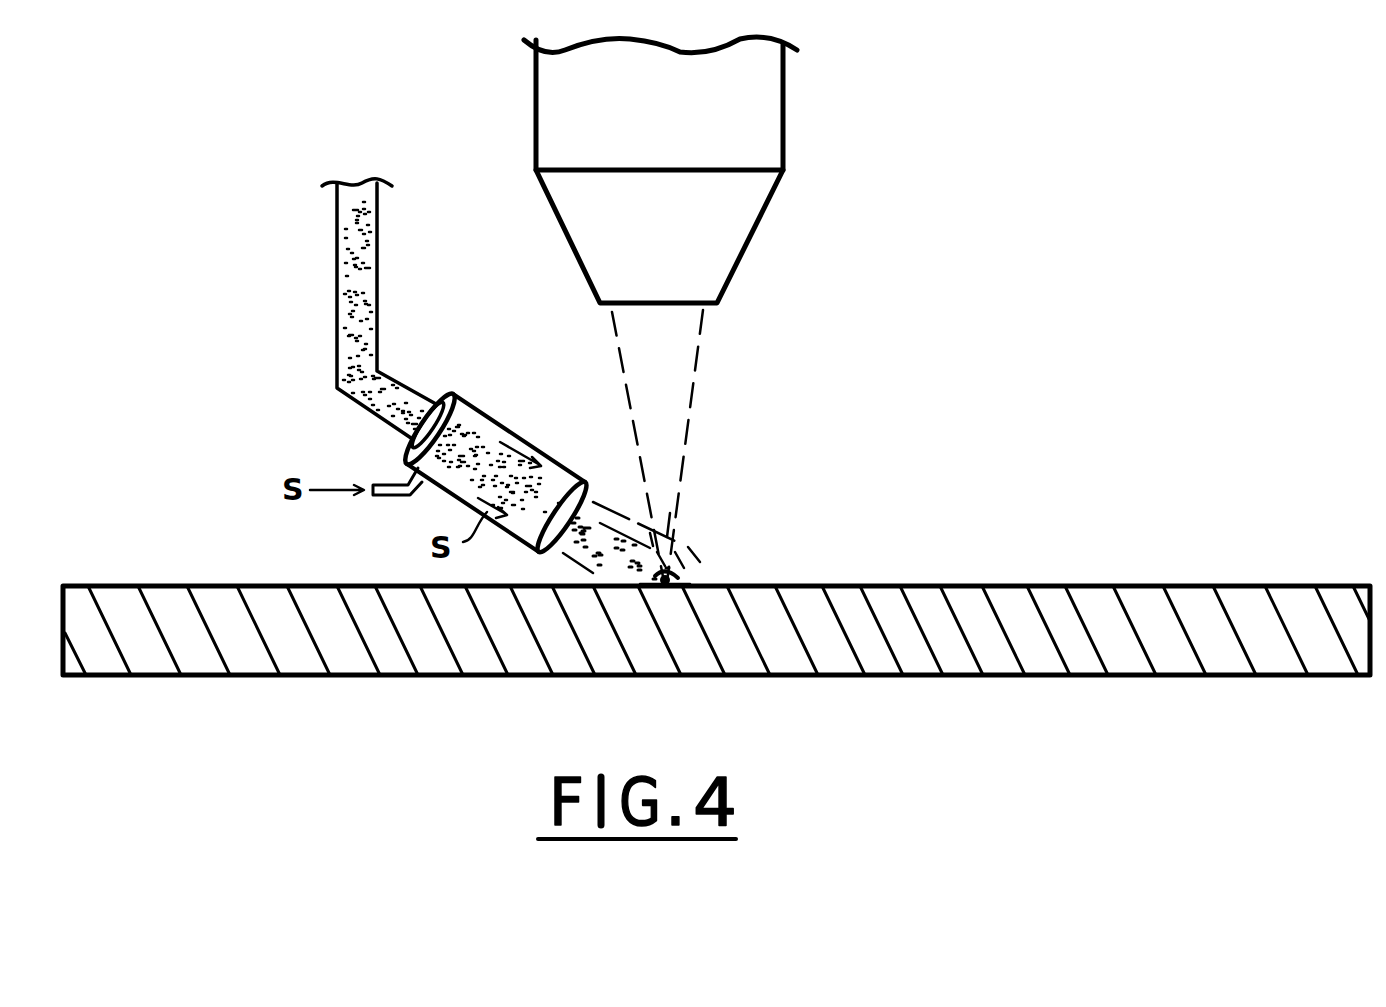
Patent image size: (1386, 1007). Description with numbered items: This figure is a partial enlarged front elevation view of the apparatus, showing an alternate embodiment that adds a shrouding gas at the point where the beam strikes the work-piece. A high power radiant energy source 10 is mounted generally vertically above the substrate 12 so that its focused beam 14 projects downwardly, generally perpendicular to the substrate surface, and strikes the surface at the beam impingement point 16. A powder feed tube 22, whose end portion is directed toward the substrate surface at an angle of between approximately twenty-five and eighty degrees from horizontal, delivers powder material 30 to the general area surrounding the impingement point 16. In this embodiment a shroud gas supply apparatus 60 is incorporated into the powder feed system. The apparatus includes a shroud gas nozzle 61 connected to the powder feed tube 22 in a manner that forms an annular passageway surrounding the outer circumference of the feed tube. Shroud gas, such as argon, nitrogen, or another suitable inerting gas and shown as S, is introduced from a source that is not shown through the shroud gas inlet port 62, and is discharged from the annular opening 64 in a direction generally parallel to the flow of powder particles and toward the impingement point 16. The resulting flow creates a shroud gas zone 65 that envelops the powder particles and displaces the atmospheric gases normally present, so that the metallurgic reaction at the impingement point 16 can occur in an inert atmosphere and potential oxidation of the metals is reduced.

The high power radiant energy source 10 is at (697, 124).
The substrate 12 is at (1165, 584).
The focused beam 14 is at (693, 396).
The beam impingement point 16 is at (697, 580).
The powder feed tube 22 is at (337, 306).
The powder material 30 is at (700, 552).
The shroud gas supply apparatus 60 is at (540, 408).
The shroud gas nozzle 61 is at (546, 447).
The shroud gas inlet port 62 is at (393, 498).
The annular opening 64 is at (560, 548).
The shroud gas zone 65 is at (620, 507).